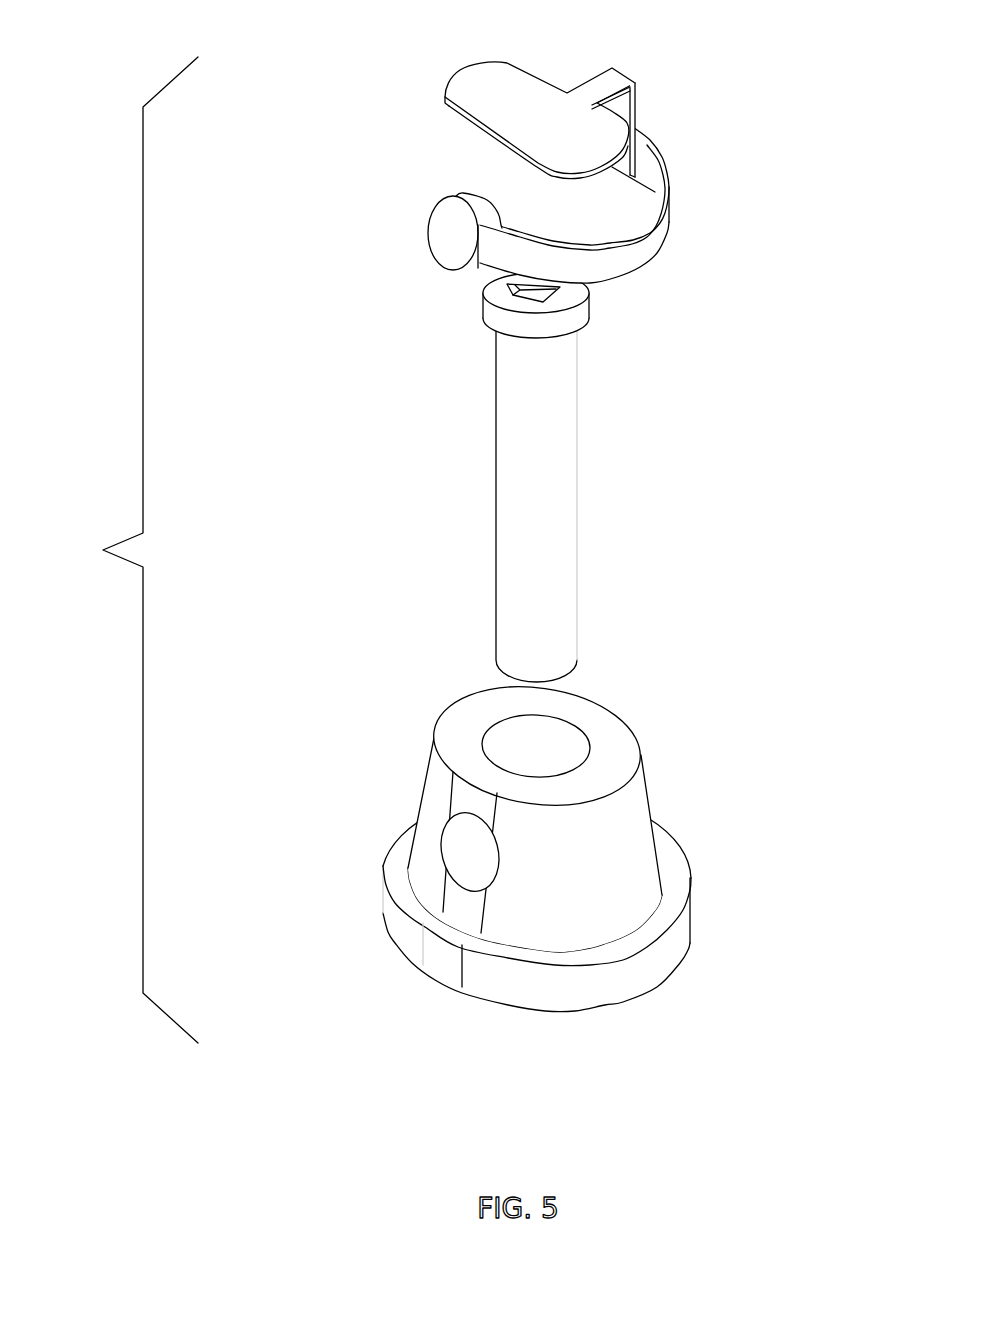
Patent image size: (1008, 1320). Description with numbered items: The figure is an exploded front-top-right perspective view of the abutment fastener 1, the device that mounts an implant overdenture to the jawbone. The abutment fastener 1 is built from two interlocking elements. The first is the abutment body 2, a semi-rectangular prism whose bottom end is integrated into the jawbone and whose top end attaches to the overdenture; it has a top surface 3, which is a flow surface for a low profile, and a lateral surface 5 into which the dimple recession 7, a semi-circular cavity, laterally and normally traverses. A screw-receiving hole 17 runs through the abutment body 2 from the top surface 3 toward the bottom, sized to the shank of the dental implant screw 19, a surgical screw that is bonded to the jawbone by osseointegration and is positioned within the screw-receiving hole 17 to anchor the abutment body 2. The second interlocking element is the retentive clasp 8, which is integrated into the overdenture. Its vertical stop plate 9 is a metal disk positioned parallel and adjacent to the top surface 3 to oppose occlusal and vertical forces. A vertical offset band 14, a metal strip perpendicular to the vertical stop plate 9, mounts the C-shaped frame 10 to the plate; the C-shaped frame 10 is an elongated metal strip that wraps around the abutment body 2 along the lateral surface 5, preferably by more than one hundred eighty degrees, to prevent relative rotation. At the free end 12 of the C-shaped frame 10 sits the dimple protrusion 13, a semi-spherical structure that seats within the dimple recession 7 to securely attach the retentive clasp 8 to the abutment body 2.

The abutment fastener 1 is at (130, 550).
The abutment body 2 is at (592, 835).
The top surface 3 is at (534, 826).
The lateral surface 5 is at (650, 805).
The dimple recession 7 is at (463, 845).
The screw-receiving hole 17 is at (550, 755).
The dental implant screw 19 is at (573, 442).
The retentive clasp 8 is at (615, 163).
The vertical stop plate 9 is at (465, 82).
The vertical offset band 14 is at (633, 113).
The C-shaped frame 10 is at (665, 210).
The free end 12 is at (447, 232).
The dimple protrusion 13 is at (473, 198).